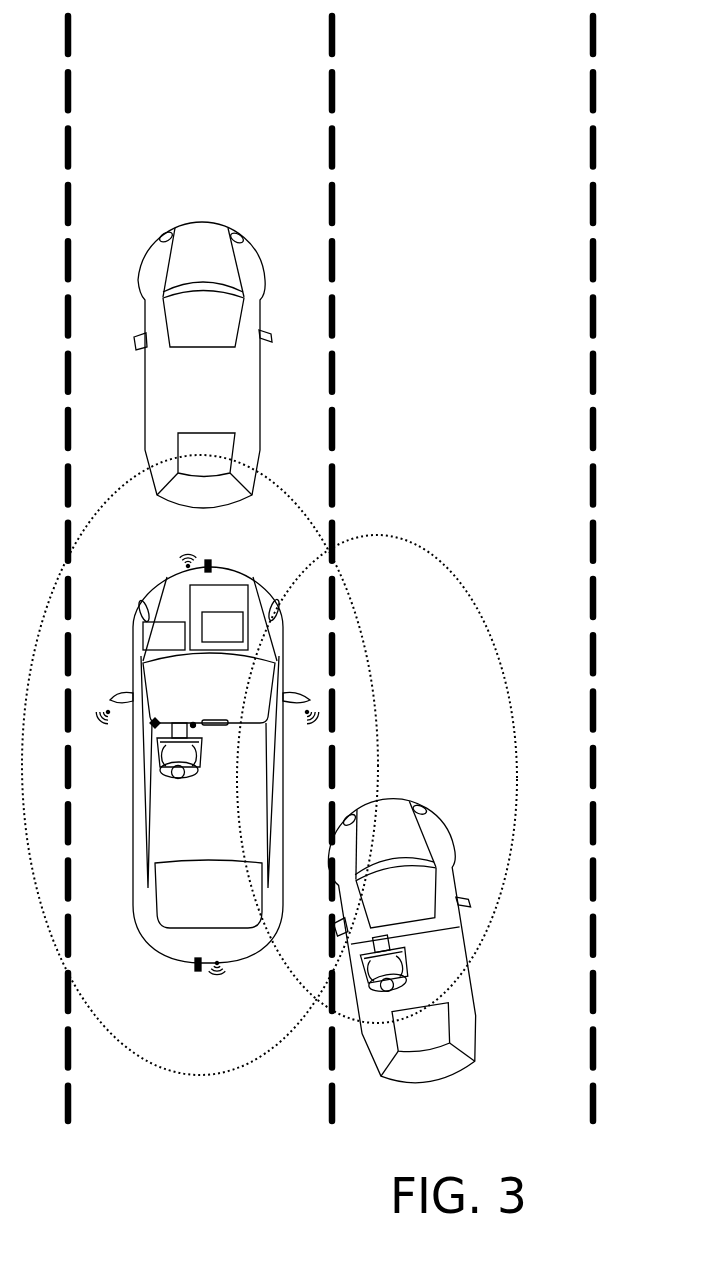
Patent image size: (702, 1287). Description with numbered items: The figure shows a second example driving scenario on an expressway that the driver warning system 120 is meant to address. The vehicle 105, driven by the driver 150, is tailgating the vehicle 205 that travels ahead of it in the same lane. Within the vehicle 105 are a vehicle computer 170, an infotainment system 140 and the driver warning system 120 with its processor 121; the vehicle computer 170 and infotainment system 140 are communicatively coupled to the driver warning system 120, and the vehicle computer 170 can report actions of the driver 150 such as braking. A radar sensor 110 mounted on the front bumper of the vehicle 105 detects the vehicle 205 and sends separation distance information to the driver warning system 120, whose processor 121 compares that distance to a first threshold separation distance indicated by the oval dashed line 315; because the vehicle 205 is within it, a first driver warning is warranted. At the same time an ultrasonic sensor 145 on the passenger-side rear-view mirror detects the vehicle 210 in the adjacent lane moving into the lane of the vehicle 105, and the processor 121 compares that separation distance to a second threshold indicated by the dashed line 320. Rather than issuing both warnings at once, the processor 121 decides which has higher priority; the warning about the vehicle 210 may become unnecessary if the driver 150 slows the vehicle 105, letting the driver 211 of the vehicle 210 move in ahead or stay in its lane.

The vehicle 105 is at (133, 580).
The radar sensor 110 is at (187, 566).
The driver warning system 120 is at (245, 608).
The processor 121 is at (240, 634).
The vehicle computer 170 is at (182, 645).
The infotainment system 140 is at (217, 720).
The ultrasonic sensor 145 is at (303, 713).
The driver 150 is at (187, 778).
The vehicle 205 is at (176, 197).
The vehicle 210 is at (438, 781).
The driver 211 is at (427, 962).
The dashed line 315 is at (372, 670).
The dashed line 320 is at (497, 648).